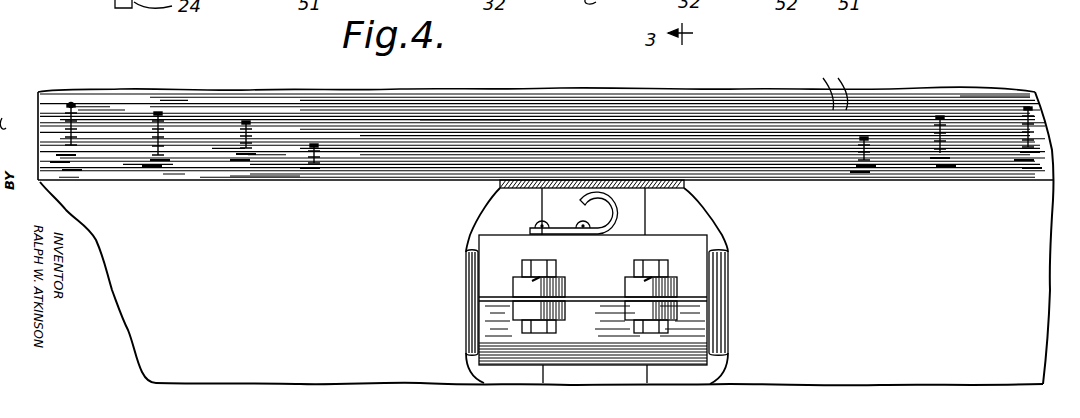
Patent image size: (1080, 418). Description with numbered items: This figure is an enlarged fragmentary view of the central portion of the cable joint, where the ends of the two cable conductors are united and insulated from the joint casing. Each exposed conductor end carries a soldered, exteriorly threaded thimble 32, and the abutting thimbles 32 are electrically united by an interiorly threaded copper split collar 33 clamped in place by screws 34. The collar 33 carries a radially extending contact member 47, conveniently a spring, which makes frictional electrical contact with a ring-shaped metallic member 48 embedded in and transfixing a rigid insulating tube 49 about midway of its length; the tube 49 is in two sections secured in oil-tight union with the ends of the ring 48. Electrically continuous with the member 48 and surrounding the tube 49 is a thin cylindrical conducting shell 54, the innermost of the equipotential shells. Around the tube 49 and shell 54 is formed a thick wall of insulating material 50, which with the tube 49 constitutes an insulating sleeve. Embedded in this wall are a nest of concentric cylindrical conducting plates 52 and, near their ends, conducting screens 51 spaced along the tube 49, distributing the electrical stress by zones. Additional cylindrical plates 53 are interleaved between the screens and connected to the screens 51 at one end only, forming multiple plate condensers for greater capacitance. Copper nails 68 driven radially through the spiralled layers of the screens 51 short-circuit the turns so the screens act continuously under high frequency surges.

The exteriorly threaded thimble 32 is at (471, 345).
The split collar 33 is at (690, 320).
The screws 34 is at (643, 327).
The contact member 47 is at (620, 213).
The metallic member 48 is at (560, 192).
The rigid insulating tube 49 is at (545, 152).
The insulating material 50 is at (978, 112).
The conducting screens 51 is at (72, 163).
The cylindrical conducting plates 52 is at (808, 133).
The cylindrical plates 53 is at (530, 142).
The cylindrical conducting shell 54 is at (383, 177).
The copper nails 68 is at (152, 128).